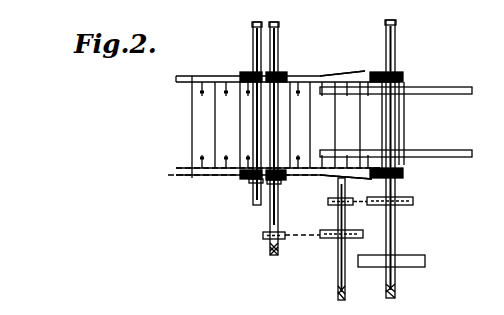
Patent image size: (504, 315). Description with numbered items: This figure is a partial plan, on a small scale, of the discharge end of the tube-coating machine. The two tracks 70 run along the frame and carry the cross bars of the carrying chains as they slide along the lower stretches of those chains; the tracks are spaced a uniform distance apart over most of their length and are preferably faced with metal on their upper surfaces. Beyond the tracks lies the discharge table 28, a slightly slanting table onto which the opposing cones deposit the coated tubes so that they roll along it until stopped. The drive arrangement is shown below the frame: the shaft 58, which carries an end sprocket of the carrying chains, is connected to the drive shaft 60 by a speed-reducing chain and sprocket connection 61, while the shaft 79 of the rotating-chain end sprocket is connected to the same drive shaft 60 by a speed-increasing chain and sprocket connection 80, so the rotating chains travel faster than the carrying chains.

The track 70 is at (352, 72).
The discharge table 28 is at (457, 112).
The shaft 79 is at (273, 222).
The speed-increasing chain and sprocket connection 80 is at (308, 237).
The drive shaft 60 is at (342, 268).
The speed-reducing chain and sprocket connection 61 is at (368, 200).
The shaft 58 is at (396, 248).